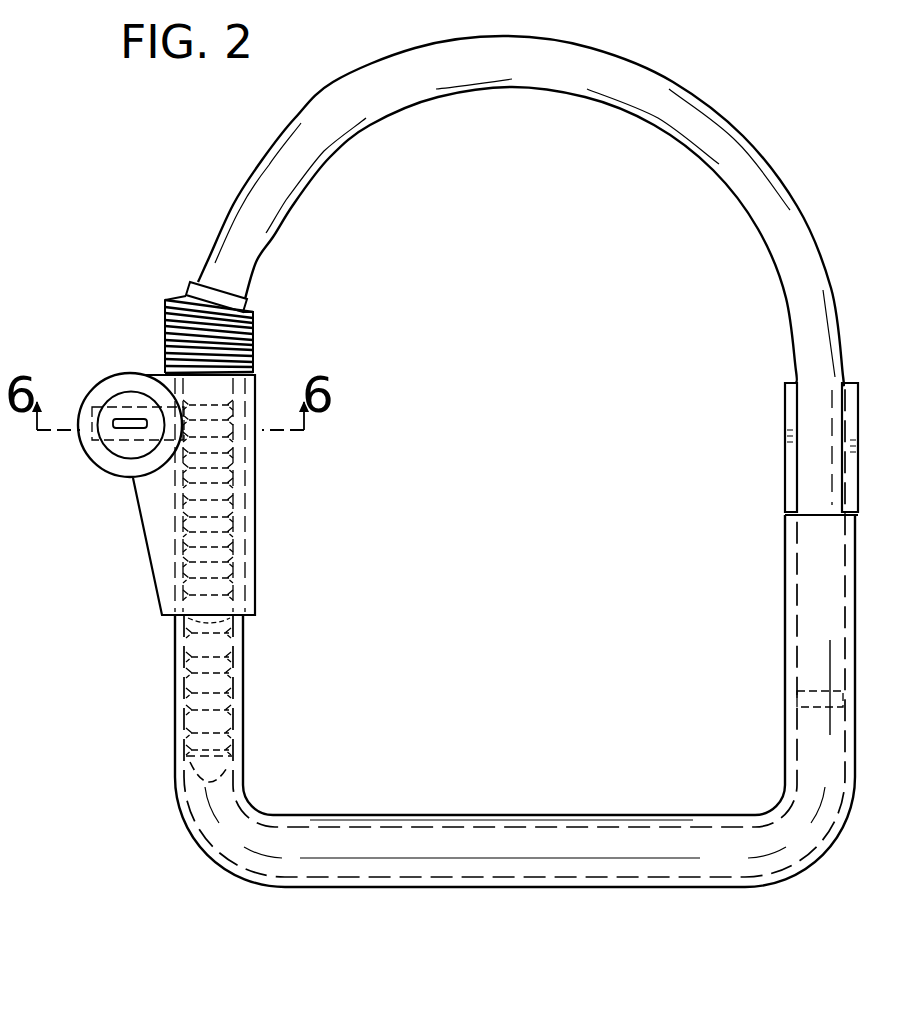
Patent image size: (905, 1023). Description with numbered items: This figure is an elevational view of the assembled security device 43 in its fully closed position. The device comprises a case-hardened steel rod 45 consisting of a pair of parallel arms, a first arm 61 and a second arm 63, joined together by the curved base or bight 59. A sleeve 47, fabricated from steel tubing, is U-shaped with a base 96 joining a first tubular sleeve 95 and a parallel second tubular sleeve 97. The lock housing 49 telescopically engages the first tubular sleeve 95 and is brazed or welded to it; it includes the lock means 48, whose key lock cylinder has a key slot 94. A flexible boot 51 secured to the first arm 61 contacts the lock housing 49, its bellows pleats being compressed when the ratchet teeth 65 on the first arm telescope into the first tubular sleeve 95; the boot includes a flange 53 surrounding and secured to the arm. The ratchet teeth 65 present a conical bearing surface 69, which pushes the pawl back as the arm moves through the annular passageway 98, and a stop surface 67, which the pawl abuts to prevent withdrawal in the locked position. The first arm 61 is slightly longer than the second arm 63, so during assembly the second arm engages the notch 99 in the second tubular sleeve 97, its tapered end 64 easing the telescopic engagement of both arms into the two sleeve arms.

The security device 43 is at (716, 76).
The rod 45 is at (722, 182).
The sleeve 47 is at (500, 812).
The lock means 48 is at (125, 452).
The lock housing 49 is at (116, 372).
The flexible boot 51 is at (252, 334).
The flange 53 is at (200, 284).
The bight 59 is at (526, 86).
The first arm 61 is at (234, 678).
The second arm 63 is at (806, 484).
The tapered end 64 is at (797, 710).
The ratchet teeth 65 is at (178, 644).
The stop surface 67 is at (246, 548).
The conical bearing surface 69 is at (236, 490).
The key slot 94 is at (118, 428).
The first tubular sleeve 95 is at (178, 672).
The base 96 is at (508, 890).
The second tubular sleeve 97 is at (786, 632).
The annular passageway 98 is at (182, 742).
The notch 99 is at (787, 458).